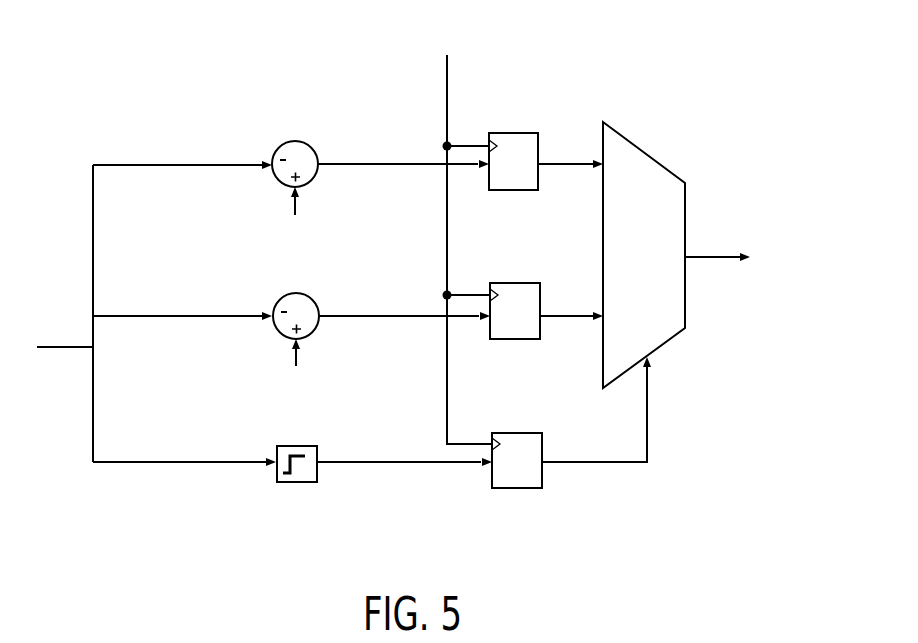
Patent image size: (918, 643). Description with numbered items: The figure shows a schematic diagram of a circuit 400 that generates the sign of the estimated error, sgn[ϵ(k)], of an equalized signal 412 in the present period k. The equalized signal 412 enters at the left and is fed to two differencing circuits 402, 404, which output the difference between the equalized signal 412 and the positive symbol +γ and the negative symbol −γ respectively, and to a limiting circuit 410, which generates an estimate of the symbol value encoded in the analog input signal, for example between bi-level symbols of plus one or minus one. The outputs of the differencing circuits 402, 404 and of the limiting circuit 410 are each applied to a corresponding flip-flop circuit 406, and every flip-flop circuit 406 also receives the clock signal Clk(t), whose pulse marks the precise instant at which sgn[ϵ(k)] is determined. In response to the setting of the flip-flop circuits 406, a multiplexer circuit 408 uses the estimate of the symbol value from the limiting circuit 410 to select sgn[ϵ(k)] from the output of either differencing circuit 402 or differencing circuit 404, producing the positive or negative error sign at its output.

The circuit 400 is at (690, 60).
The differencing circuit 402 is at (273, 152).
The differencing circuit 404 is at (275, 303).
The flip-flop circuit 406 is at (520, 133).
The multiplexer (MUX) circuit 408 is at (689, 300).
The limiting circuit 410 is at (277, 474).
The equalized signal 412 is at (57, 345).